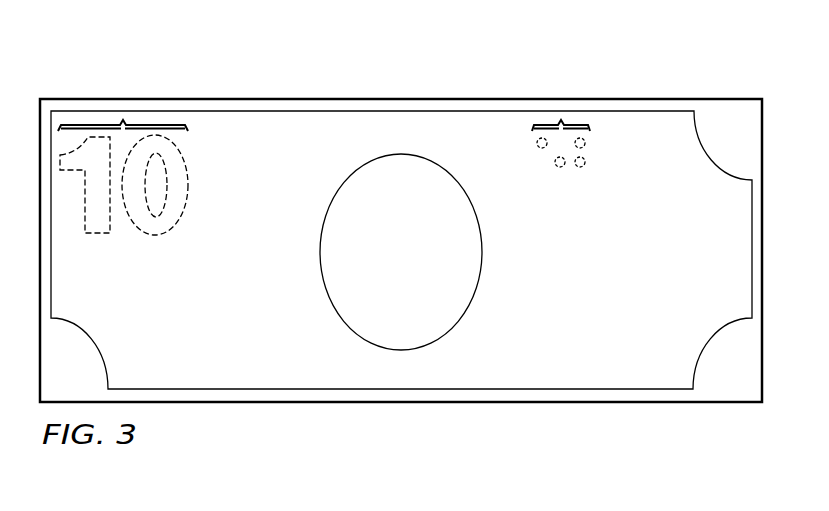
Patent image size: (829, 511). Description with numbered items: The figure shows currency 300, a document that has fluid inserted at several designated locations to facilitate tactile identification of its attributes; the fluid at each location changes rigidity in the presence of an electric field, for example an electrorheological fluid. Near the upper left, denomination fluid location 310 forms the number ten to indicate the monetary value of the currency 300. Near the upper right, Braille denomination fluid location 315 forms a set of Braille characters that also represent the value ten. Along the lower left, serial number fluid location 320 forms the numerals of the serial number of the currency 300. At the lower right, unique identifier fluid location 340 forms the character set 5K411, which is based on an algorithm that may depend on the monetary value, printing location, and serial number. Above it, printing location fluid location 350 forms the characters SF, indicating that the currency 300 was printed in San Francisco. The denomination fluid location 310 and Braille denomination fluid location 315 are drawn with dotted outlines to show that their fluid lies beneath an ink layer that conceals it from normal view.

The currency 300 is at (303, 98).
The denomination fluid location 310 is at (123, 115).
The Braille denomination fluid location 315 is at (561, 118).
The serial number fluid location 320 is at (218, 357).
The unique identifier fluid location 340 is at (568, 357).
The printing location fluid location 350 is at (693, 231).